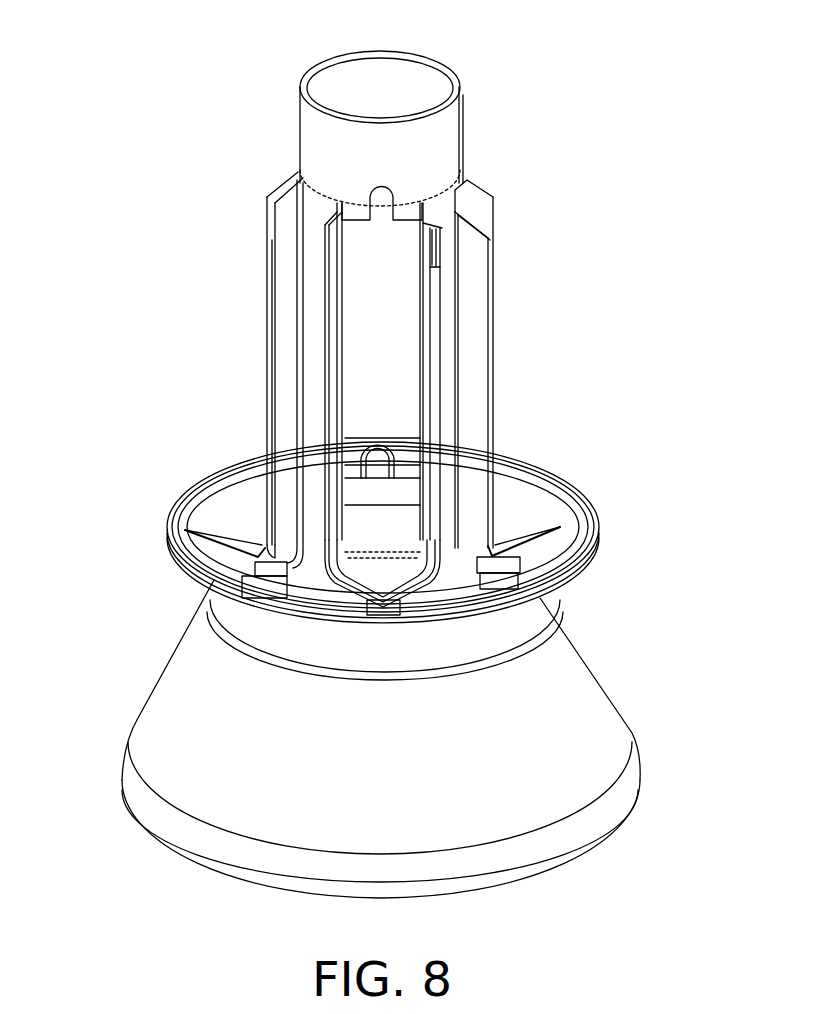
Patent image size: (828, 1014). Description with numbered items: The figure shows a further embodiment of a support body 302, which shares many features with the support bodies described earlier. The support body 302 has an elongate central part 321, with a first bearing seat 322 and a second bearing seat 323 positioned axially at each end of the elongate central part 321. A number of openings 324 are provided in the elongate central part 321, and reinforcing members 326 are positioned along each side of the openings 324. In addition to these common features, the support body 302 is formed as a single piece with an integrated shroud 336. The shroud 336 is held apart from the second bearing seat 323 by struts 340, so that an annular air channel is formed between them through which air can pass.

The support body 302 is at (238, 42).
The elongate central part 321 is at (450, 233).
The first bearing seat 322 is at (450, 120).
The second bearing seat 323 is at (460, 580).
The openings 324 is at (377, 365).
The reinforcing members 326 is at (433, 313).
The shroud 336 is at (173, 708).
The struts 340 is at (242, 565).